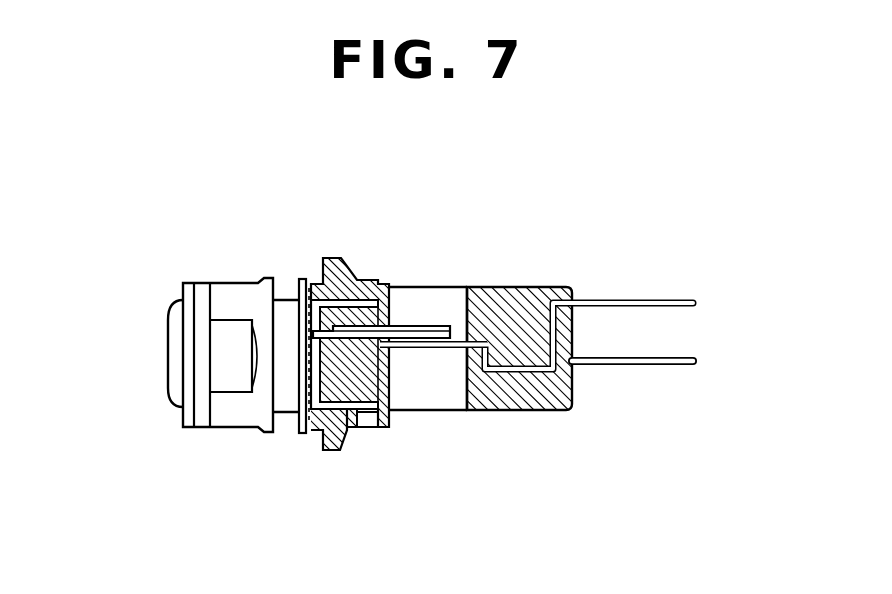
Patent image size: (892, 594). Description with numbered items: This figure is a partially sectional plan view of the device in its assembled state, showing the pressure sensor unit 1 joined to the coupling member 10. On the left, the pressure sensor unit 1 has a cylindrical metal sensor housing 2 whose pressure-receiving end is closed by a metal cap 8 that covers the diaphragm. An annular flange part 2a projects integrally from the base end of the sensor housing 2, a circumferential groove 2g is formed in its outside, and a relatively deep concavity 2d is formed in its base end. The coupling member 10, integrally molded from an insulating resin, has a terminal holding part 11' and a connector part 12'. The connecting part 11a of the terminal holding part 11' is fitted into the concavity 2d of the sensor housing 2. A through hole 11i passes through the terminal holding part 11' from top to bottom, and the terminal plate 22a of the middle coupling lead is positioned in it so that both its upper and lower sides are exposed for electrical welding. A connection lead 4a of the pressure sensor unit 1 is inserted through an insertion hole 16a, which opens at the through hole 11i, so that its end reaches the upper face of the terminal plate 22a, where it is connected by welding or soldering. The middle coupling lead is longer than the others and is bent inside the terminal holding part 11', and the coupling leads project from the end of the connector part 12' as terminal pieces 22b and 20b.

The pressure sensor unit 1 is at (278, 240).
The sensor housing 2 is at (230, 292).
The cap 8 is at (168, 327).
The circumferential groove 2g is at (296, 420).
The annular flange part 2a is at (335, 430).
The concavity 2d is at (345, 412).
The terminal holding part 11' is at (350, 327).
The connecting part 11a is at (365, 417).
The through hole 11i is at (467, 410).
The coupling member 10 is at (569, 243).
The connector part 12' is at (518, 372).
The insertion hole 16a is at (387, 329).
The connection lead 4a is at (437, 329).
The terminal plate 22a is at (420, 348).
The terminal piece 22b is at (673, 298).
The terminal piece 20b is at (672, 366).